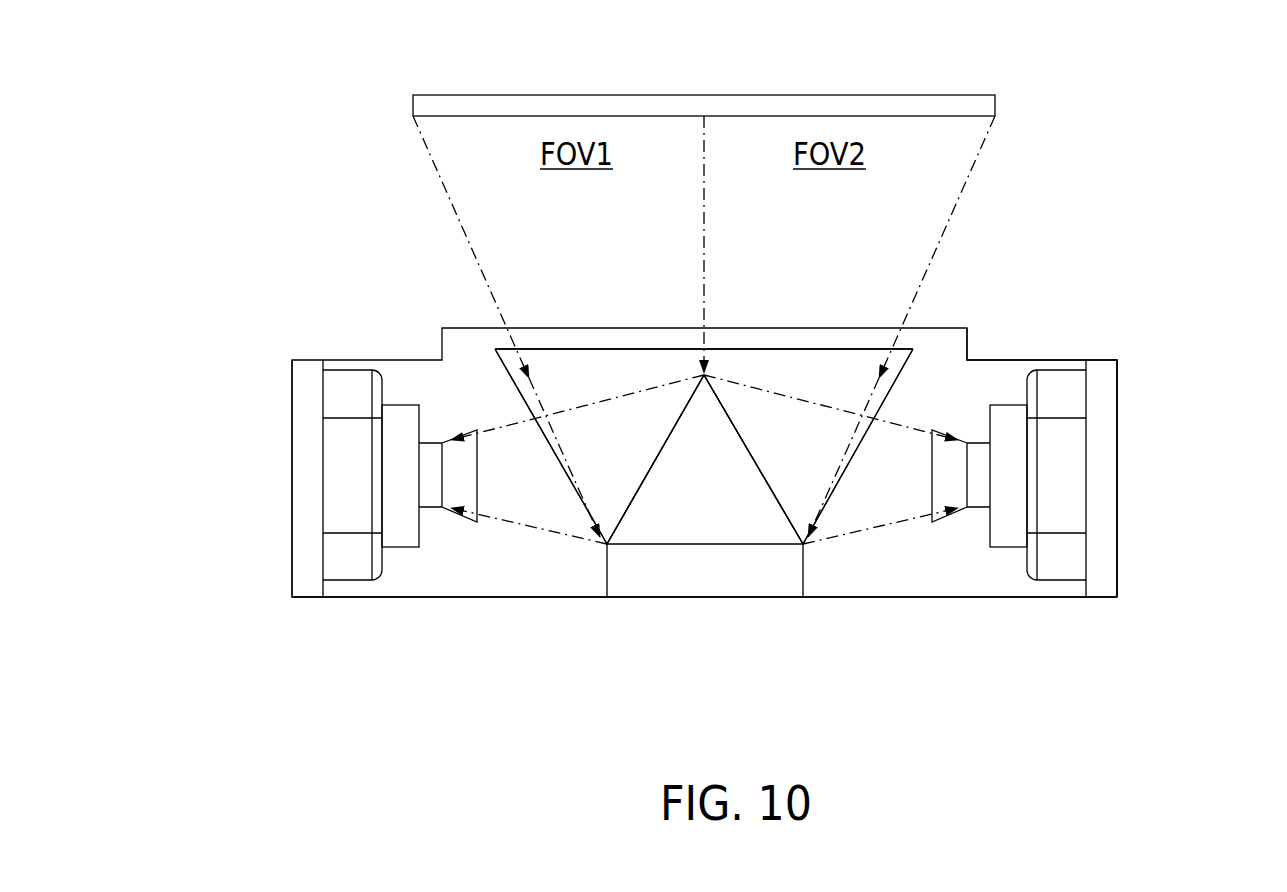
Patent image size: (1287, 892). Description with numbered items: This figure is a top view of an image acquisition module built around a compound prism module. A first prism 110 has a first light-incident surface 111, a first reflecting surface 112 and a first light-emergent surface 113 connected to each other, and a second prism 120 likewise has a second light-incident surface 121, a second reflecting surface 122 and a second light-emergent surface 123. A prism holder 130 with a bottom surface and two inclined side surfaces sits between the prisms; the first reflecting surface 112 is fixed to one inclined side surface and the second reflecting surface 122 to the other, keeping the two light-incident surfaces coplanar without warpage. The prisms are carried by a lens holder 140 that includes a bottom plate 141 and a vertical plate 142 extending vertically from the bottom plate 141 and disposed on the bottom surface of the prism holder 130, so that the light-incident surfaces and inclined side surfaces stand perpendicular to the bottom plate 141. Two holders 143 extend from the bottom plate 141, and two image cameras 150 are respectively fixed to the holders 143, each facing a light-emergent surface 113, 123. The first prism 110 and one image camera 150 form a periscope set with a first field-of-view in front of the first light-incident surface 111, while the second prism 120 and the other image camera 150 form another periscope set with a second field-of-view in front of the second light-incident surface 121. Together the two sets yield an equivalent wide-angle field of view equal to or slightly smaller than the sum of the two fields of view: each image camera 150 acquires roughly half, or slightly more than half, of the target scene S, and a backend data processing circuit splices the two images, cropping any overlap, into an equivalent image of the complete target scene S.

The target scene S is at (997, 100).
The first prism 110 is at (637, 400).
The first light-incident surface 111 is at (588, 347).
The first reflecting surface 112 is at (660, 485).
The first light-emergent surface 113 is at (583, 524).
The second prism 120 is at (775, 400).
The second light-incident surface 121 is at (818, 347).
The second reflecting surface 122 is at (760, 485).
The second light-emergent surface 123 is at (825, 524).
The prism holder 130 is at (713, 517).
The lens holder 140 is at (442, 328).
The bottom plate 141 is at (993, 378).
The vertical plate 142 is at (683, 573).
The holder 143 is at (305, 493).
The image camera 150 is at (348, 558).